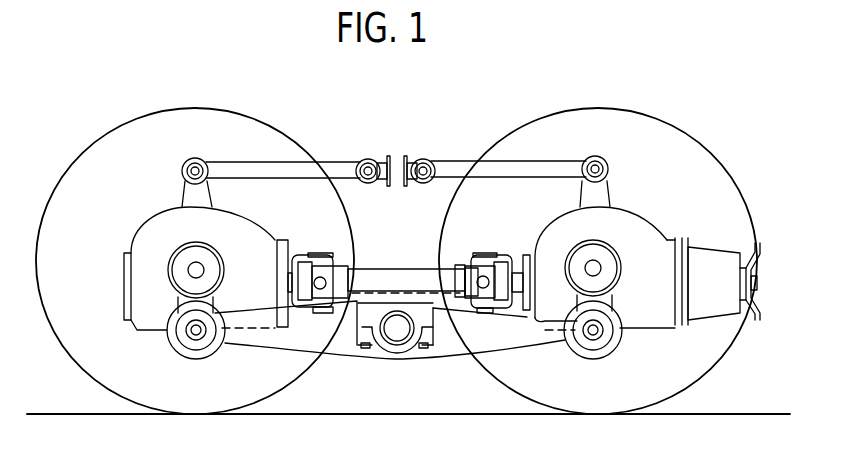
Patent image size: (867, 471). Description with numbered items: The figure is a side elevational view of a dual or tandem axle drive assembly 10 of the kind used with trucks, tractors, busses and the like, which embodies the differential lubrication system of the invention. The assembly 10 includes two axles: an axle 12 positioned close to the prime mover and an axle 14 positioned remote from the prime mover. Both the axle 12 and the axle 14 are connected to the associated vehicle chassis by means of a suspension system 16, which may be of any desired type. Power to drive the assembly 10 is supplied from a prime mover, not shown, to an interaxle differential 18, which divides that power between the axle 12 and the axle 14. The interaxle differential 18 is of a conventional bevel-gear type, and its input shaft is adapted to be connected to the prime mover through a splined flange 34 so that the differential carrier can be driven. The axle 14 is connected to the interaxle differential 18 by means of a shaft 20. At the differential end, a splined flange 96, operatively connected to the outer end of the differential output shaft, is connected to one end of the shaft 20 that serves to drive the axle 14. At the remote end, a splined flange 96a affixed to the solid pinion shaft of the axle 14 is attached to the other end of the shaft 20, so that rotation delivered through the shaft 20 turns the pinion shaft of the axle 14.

The dual or tandem axle drive assembly 10 is at (400, 143).
The axle 12 is at (613, 228).
The axle 14 is at (163, 228).
The suspension system 16 is at (345, 343).
The interaxle differential 18 is at (710, 254).
The shaft 20 is at (388, 278).
The splined flange 34 is at (764, 313).
The splined flange 96 is at (492, 256).
The splined flange 96a is at (301, 256).